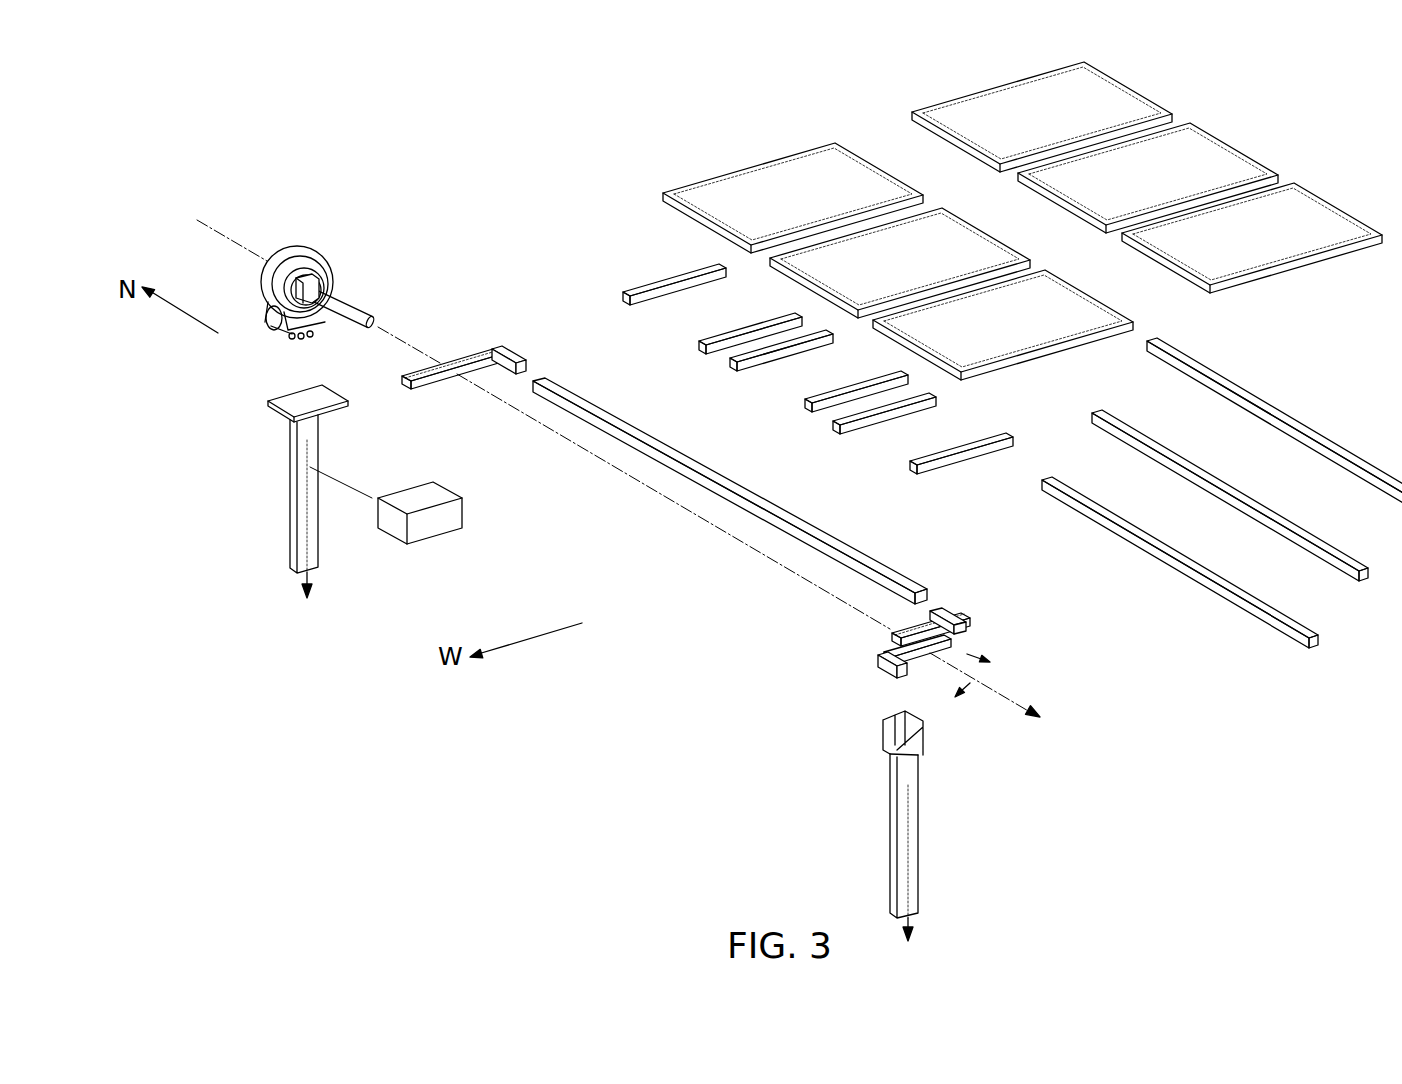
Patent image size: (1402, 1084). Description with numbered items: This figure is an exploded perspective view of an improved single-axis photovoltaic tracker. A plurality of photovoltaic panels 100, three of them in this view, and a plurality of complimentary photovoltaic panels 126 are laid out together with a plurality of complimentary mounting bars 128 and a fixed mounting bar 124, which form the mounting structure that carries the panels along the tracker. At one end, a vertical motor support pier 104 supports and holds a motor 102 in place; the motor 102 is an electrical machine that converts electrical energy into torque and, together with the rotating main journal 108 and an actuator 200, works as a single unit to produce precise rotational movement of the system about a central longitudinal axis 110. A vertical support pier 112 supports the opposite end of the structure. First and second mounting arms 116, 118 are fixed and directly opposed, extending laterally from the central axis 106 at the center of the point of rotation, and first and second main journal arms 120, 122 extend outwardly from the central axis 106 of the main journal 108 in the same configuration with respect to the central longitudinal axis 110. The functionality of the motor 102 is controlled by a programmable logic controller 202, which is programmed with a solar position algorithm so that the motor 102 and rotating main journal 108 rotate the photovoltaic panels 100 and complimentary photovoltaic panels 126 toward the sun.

The photovoltaic panels 100 is at (878, 169).
The motor 102 is at (360, 300).
The vertical motor support pier 104 is at (298, 491).
The central axis 106 is at (310, 530).
The rotating main journal 108 is at (290, 292).
The central longitudinal axis 110 is at (1003, 693).
The vertical support pier 112 is at (913, 875).
The first mounting arm 116 is at (474, 356).
The second mounting arm 118 is at (476, 365).
The first main journal arm 120 is at (514, 353).
The second main journal arm 122 is at (877, 655).
The fixed mounting bar 124 is at (702, 468).
The complimentary photovoltaic panels 126 is at (1125, 87).
The complimentary mounting bars 128 is at (700, 340).
The actuator 200 is at (313, 257).
The programmable logic controller 202 is at (465, 511).